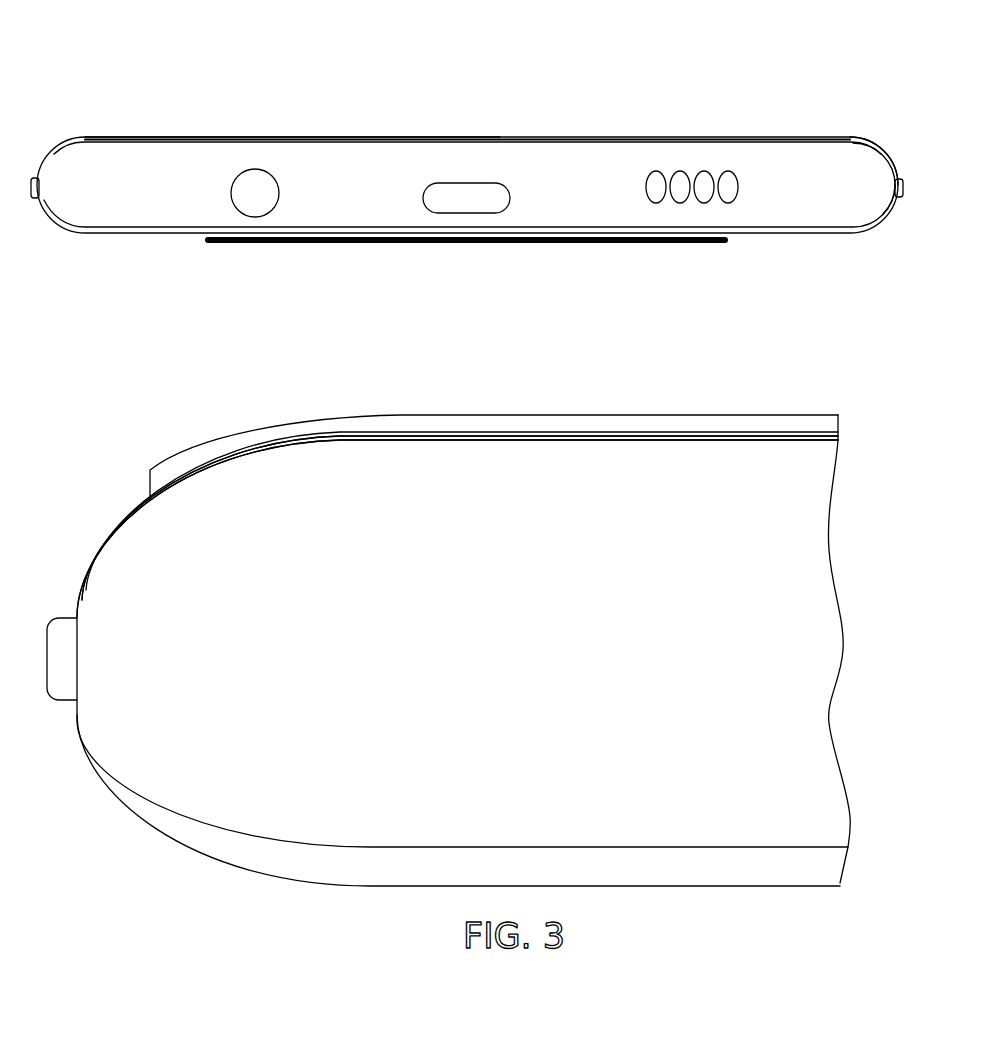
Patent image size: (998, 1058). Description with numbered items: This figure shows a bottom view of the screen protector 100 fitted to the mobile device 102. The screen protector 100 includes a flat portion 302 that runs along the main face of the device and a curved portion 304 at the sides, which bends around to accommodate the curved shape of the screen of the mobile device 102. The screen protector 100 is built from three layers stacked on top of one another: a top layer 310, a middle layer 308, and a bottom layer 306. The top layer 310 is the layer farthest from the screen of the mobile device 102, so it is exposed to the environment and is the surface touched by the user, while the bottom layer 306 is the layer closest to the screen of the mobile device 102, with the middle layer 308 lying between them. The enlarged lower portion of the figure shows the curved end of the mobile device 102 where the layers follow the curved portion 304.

The screen protector 100 is at (798, 137).
The mobile device 102 is at (905, 188).
The flat portion 302 is at (722, 110).
The curved portion 304 is at (885, 108).
The bottom layer 306 is at (792, 441).
The middle layer 308 is at (838, 437).
The top layer 310 is at (828, 421).